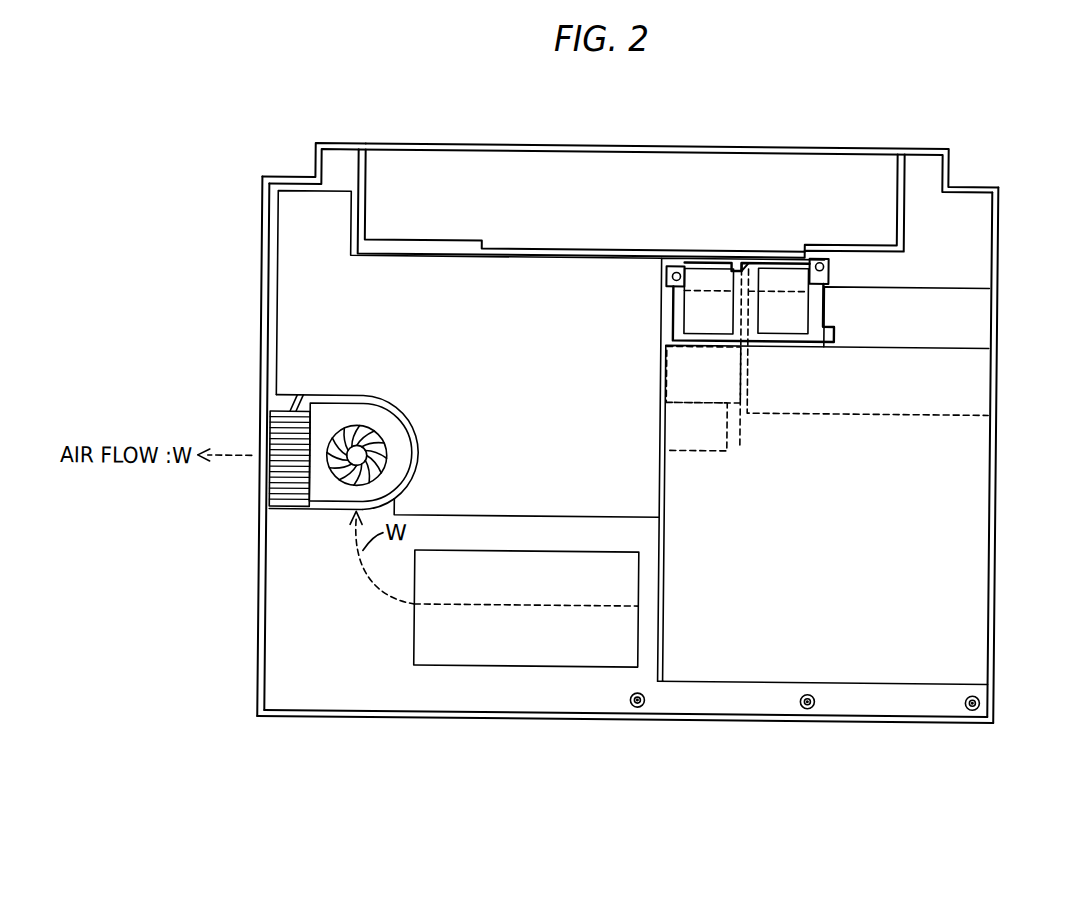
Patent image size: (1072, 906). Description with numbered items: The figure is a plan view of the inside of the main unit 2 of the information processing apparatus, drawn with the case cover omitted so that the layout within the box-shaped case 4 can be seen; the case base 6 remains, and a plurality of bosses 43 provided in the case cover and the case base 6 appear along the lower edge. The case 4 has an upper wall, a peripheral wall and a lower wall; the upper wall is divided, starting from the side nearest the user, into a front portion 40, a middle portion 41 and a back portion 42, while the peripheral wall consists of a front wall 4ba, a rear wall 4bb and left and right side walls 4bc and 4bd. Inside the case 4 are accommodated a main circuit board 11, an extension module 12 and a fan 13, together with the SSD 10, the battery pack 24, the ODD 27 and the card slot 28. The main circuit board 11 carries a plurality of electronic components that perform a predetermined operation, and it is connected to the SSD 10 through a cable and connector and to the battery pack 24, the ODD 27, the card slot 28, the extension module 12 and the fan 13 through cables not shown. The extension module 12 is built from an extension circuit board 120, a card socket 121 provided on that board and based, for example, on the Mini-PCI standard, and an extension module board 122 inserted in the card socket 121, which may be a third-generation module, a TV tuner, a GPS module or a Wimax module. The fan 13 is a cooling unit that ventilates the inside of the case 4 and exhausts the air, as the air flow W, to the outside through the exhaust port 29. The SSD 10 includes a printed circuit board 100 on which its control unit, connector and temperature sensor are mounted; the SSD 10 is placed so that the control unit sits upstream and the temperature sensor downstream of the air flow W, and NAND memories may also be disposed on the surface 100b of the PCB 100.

The main unit 2 is at (925, 127).
The case 4 is at (250, 249).
The front wall 4ba is at (531, 721).
The rear wall 4bb is at (337, 146).
The side wall 4bc is at (260, 360).
The side wall 4bd is at (996, 310).
The case base 6 is at (283, 726).
The SSD 10 is at (435, 666).
The main circuit board 11 is at (289, 317).
The extension module 12 is at (670, 266).
The fan 13 is at (408, 431).
The battery pack 24 is at (627, 160).
The ODD 27 is at (980, 592).
The card slot 28 is at (955, 286).
The exhaust port 29 is at (262, 489).
The front portion 40 is at (721, 721).
The middle portion 41 is at (267, 409).
The back portion 42 is at (448, 242).
The bosses 43 is at (641, 707).
The printed circuit board 100 is at (426, 657).
The surface 100b is at (416, 625).
The extension circuit board 120 is at (738, 267).
The card socket 121 is at (665, 291).
The extension module board 122 is at (727, 451).